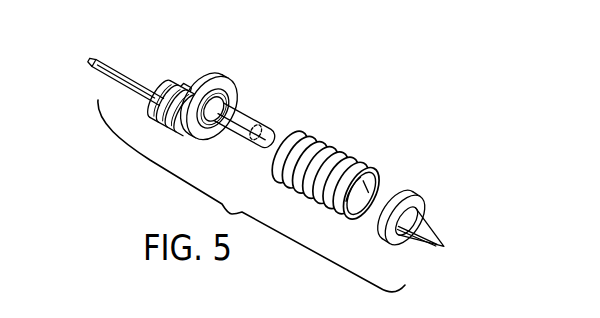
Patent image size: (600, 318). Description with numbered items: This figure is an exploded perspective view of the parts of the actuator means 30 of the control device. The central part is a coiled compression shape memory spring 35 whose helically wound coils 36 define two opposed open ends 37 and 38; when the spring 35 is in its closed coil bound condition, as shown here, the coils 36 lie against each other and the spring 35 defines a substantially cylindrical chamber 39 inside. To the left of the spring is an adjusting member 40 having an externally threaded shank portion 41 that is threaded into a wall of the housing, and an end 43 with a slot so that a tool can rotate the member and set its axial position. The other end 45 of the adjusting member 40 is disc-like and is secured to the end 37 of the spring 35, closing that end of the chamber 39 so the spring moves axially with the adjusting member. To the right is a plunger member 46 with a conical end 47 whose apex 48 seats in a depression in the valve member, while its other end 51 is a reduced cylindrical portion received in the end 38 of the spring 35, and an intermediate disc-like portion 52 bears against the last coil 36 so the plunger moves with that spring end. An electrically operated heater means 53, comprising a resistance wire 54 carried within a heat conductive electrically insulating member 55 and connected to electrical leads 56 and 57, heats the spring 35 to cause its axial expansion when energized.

The actuator means 30 is at (370, 132).
The coiled compression shape memory spring 35 is at (368, 150).
The helically wound coils 36 is at (326, 150).
The open end 37 is at (297, 137).
The open end 38 is at (375, 181).
The cylindrical chamber 39 is at (365, 187).
The adjusting member 40 is at (219, 82).
The externally threaded shank portion 41 is at (197, 72).
The end 43 is at (185, 76).
The other end 45 is at (238, 90).
The plunger member 46 is at (417, 237).
The conical end 47 is at (441, 231).
The apex 48 is at (447, 252).
The other end 51 is at (390, 237).
The intermediate disc-like portion 52 is at (400, 248).
The electrically operated heater means 53 is at (250, 113).
The resistance wire 54 is at (254, 131).
The electrically insulating member 55 is at (270, 113).
The electrical lead 56 is at (97, 62).
The electrical lead 57 is at (62, 88).